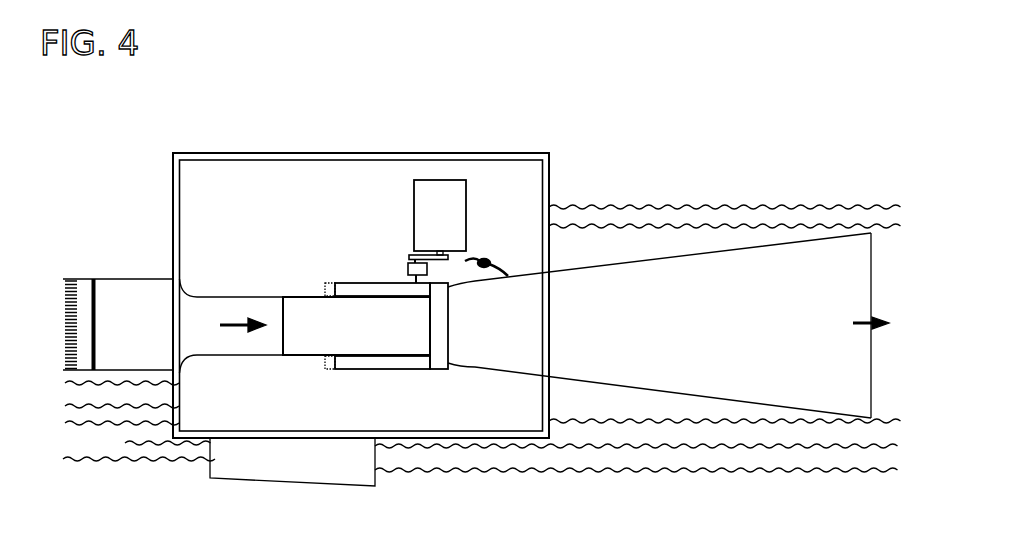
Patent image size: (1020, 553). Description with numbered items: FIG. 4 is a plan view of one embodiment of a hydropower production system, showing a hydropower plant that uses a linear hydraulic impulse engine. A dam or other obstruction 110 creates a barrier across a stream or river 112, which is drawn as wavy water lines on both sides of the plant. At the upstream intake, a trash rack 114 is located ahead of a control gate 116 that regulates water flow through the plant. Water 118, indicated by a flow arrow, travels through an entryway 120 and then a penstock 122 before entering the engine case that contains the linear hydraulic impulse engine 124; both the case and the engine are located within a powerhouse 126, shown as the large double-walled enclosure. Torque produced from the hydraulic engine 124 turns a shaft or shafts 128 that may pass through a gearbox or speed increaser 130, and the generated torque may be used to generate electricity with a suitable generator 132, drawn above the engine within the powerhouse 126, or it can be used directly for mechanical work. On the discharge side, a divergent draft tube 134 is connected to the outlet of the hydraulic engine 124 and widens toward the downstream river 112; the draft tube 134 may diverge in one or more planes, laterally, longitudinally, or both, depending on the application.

The dam or other obstruction 110 is at (292, 462).
The stream or river 112 is at (139, 421).
The trash rack 114 is at (78, 293).
The control gate 116 is at (105, 313).
The water 118 is at (226, 313).
The entryway 120 is at (183, 358).
The penstock 122 is at (235, 357).
The linear hydraulic impulse engine 124 is at (362, 370).
The powerhouse 126 is at (222, 148).
The shaft or shafts 128 is at (402, 278).
The gearbox or speed increaser 130 is at (402, 262).
The generator 132 is at (432, 173).
The divergent draft tube 134 is at (794, 325).